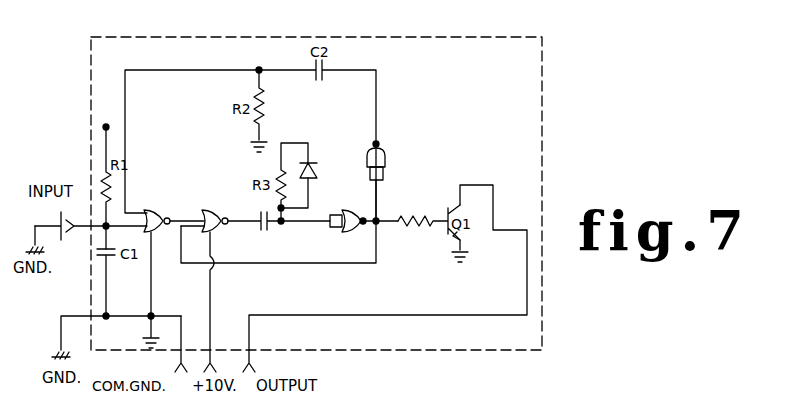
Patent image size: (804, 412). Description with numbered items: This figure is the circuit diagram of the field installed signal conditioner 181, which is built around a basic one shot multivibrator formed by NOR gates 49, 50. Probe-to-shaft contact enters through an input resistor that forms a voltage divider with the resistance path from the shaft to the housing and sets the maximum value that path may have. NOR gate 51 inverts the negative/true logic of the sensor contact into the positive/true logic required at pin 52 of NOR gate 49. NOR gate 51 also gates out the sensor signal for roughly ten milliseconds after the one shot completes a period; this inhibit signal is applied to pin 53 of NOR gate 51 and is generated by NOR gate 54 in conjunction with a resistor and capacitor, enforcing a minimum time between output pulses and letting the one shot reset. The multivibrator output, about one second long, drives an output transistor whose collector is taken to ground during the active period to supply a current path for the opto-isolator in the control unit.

The signal conditioner 181 is at (443, 33).
The pin of NOR gate 51 53 is at (147, 213).
The NOR gate 51 is at (158, 210).
The pin of NOR gate 49 52 is at (187, 219).
The NOR gate 49 is at (214, 210).
The NOR gate 50 is at (349, 212).
The NOR gate 54 is at (380, 156).